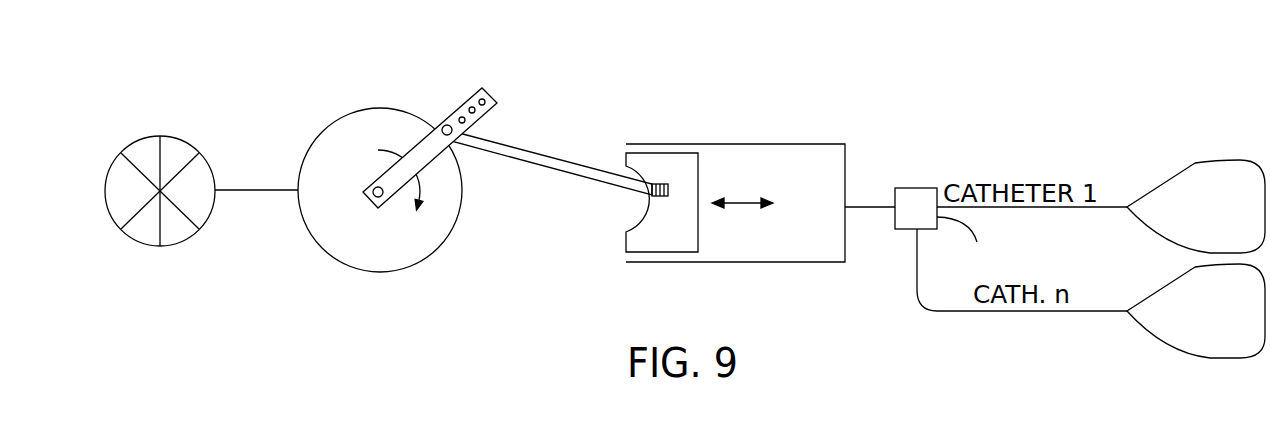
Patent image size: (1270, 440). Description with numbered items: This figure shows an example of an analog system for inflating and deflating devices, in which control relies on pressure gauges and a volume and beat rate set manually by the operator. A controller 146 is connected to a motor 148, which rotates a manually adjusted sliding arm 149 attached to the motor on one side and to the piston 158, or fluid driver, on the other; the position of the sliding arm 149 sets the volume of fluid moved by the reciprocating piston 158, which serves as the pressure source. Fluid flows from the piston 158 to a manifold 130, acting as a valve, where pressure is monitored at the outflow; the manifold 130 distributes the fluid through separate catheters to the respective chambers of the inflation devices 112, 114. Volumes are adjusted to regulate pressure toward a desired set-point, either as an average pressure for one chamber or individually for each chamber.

The inflation device 112 is at (1203, 162).
The inflation device 114 is at (1182, 343).
The manifold 130 is at (915, 188).
The controller 146 is at (160, 247).
The motor 148 is at (387, 268).
The sliding arm 149 is at (484, 86).
The piston 158 is at (765, 144).